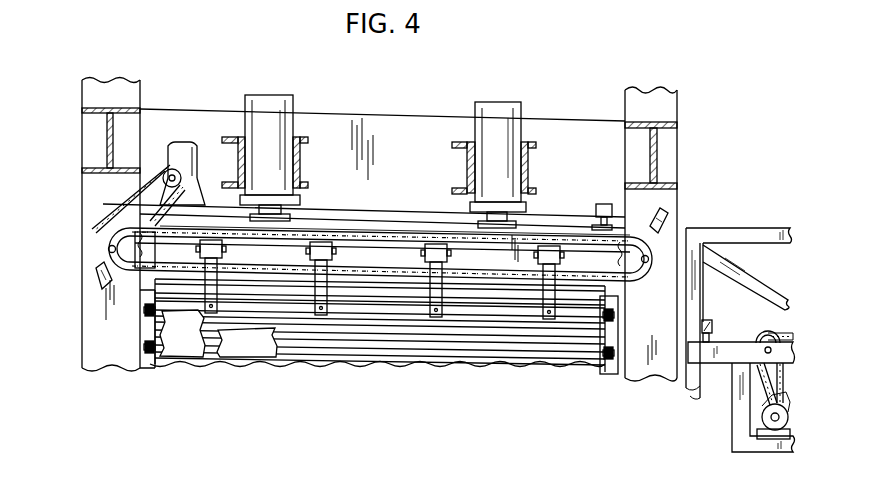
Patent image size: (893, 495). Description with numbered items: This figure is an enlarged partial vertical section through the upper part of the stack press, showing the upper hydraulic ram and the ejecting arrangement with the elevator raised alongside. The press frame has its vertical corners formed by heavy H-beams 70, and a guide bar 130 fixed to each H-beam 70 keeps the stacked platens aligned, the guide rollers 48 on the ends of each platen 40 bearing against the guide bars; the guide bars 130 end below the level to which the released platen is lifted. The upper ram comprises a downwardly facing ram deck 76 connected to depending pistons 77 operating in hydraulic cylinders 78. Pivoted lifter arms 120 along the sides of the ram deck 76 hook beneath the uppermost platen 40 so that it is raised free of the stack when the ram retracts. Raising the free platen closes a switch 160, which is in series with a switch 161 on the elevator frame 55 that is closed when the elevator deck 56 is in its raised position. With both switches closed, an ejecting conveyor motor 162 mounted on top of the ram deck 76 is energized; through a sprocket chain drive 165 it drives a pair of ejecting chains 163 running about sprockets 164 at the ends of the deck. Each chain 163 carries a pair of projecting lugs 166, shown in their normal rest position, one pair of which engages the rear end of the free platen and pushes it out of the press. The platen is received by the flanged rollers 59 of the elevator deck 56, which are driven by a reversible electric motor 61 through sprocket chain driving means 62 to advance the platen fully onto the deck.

The H-beam 70 is at (128, 82).
The hydraulic cylinder 78 is at (265, 103).
The depending piston 77 is at (300, 212).
The ram deck 76 is at (390, 260).
The ejecting chain 163 is at (385, 232).
The lifter arm 120 is at (320, 293).
The platen 40 is at (376, 322).
The guide roller 48 is at (146, 310).
The guide bar 130 is at (142, 370).
The ejecting conveyor motor 162 is at (178, 150).
The sprocket chain drive 165 is at (138, 205).
The sprocket 164 is at (100, 250).
The projecting lug 166 is at (95, 283).
The switch 160 is at (603, 204).
The elevator frame 55 is at (716, 236).
The switch 161 is at (708, 322).
The flanged roller 59 is at (765, 336).
The sprocket chain driving means 62 is at (762, 378).
The elevator deck 56 is at (738, 428).
The reversible electric motor 61 is at (778, 420).